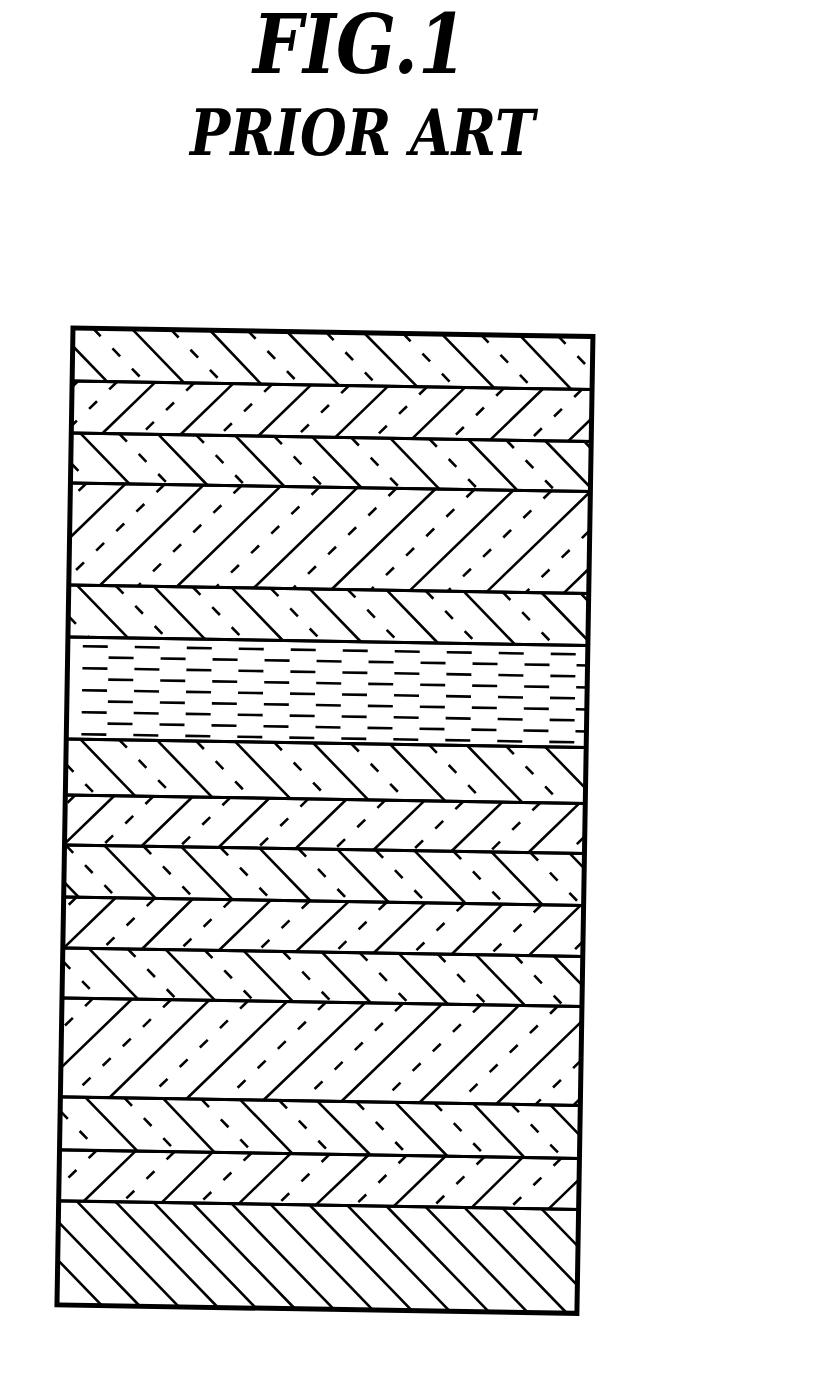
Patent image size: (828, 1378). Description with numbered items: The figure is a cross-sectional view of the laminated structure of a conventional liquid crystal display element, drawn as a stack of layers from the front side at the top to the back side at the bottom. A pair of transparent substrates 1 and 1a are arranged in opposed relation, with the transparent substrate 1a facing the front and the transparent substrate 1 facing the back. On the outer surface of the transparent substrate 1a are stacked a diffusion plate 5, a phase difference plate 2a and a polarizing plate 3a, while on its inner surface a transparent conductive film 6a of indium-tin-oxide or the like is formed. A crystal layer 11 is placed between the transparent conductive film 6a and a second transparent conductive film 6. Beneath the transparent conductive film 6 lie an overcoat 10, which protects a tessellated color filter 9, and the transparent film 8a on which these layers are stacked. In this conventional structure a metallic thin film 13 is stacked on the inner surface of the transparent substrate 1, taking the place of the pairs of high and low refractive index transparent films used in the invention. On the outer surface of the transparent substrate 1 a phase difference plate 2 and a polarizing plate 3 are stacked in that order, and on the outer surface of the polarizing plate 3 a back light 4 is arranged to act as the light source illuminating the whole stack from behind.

The polarizing plate 3a is at (592, 357).
The phase difference plate 2a is at (591, 408).
The diffusion plate 5 is at (591, 458).
The transparent substrate 1a is at (590, 530).
The transparent conductive film 6a is at (588, 612).
The crystal layer 11 is at (587, 705).
The transparent conductive film 6 is at (586, 772).
The overcoat 10 is at (585, 823).
The color filter 9 is at (584, 873).
The transparent film 8a is at (583, 925).
The metallic thin film 13 is at (582, 980).
The transparent substrate 1 is at (581, 1047).
The phase difference plate 2 is at (580, 1130).
The polarizing plate 3 is at (579, 1182).
The back light 4 is at (578, 1263).